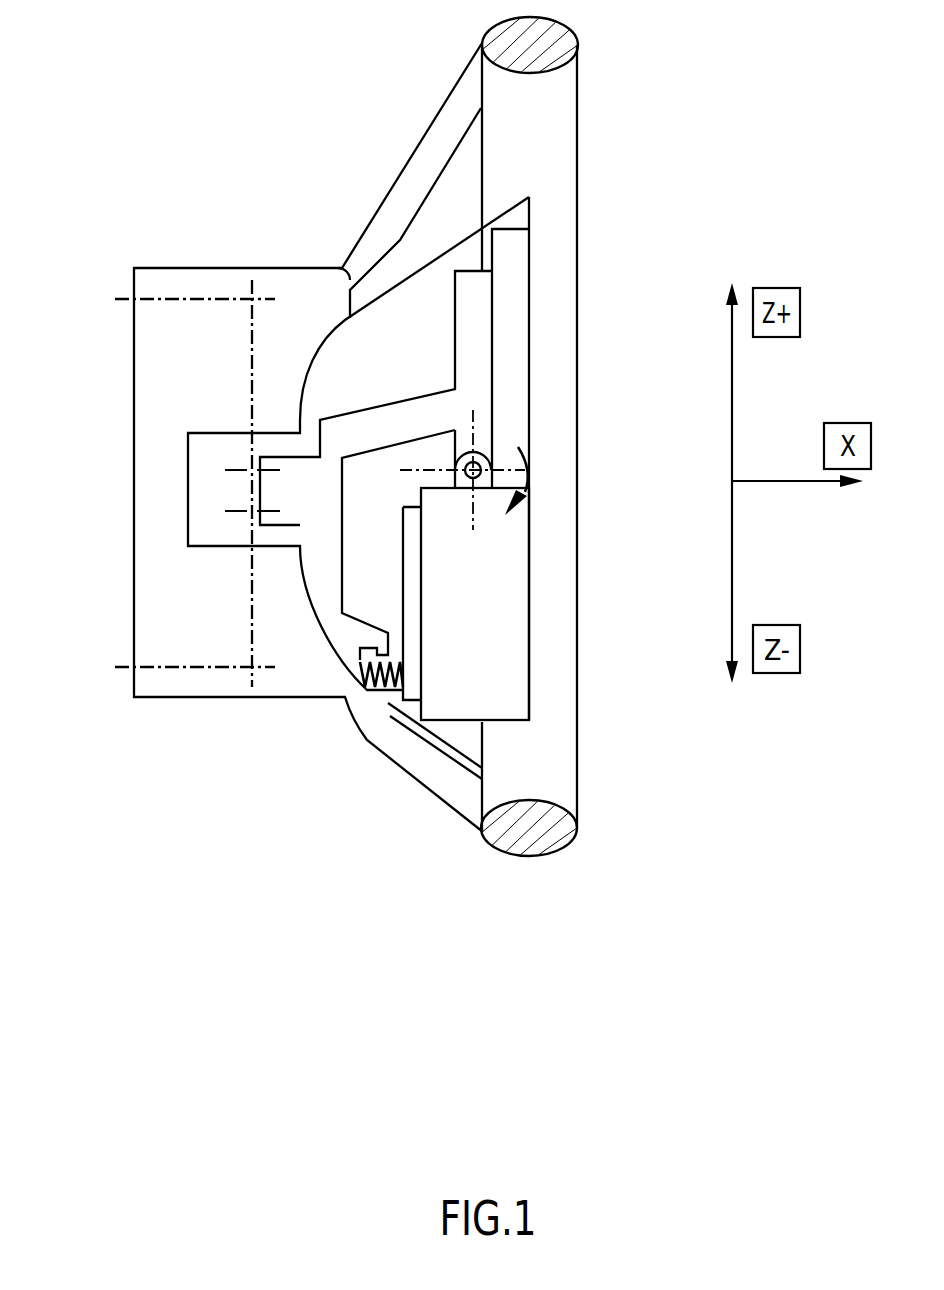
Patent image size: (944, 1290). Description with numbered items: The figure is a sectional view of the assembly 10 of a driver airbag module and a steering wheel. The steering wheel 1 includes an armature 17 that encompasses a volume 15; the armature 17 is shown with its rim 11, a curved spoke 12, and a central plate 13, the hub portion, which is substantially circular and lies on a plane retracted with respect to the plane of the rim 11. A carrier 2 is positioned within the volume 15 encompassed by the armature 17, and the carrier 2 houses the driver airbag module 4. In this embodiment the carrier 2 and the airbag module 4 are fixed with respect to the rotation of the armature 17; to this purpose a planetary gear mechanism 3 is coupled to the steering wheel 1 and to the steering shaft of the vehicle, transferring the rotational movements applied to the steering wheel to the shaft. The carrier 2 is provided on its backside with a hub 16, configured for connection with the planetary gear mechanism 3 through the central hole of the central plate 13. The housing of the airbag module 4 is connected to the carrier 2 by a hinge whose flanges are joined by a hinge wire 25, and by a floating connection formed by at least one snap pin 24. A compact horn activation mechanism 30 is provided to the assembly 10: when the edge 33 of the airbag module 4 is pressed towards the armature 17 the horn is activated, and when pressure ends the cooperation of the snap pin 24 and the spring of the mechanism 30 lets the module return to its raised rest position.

The steering wheel 1 is at (578, 280).
The carrier 2 is at (455, 247).
The planetary gear mechanism 3 is at (160, 266).
The driver airbag module 4 is at (487, 643).
The assembly 10 is at (685, 138).
The rim 11 is at (578, 95).
The curved spokes 12 is at (443, 815).
The central plate 13 is at (300, 318).
The volume 15 is at (463, 178).
The hub 16 is at (280, 497).
The armature 17 is at (462, 72).
The snap pin 24 is at (362, 650).
The hinge wire 25 is at (490, 453).
The horn activation mechanism 30 is at (380, 692).
The edge 33 is at (477, 757).